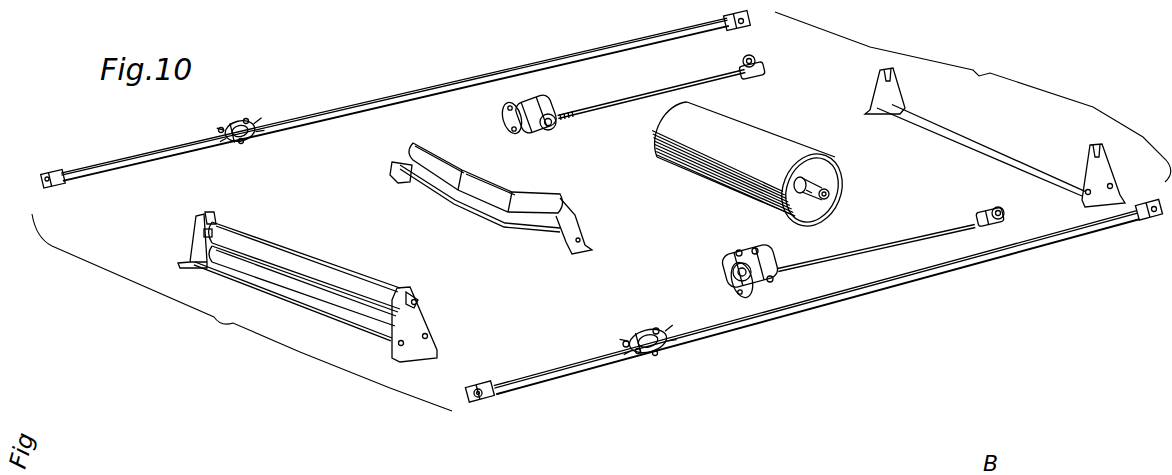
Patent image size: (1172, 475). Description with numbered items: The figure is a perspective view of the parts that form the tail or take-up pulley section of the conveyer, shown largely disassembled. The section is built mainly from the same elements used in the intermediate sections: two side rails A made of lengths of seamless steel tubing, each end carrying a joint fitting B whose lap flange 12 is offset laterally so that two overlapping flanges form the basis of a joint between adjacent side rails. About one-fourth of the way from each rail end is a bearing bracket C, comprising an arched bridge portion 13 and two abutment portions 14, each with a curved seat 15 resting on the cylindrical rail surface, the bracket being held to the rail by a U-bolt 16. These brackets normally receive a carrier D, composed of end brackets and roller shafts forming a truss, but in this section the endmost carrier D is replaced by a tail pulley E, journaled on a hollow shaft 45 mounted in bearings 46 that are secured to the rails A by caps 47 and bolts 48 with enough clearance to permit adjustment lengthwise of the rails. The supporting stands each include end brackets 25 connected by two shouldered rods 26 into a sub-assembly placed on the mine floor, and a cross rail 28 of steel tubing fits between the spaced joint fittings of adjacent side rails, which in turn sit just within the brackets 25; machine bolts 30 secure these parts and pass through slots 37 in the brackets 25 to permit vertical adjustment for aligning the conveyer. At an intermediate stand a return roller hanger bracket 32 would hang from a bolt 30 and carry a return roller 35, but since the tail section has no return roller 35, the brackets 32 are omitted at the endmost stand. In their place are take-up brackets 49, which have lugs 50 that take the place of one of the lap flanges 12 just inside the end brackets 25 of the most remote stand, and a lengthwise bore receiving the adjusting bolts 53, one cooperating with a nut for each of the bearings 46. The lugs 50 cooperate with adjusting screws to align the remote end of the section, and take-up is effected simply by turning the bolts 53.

The side rail A is at (373, 100).
The joint fitting B is at (57, 172).
The bearing bracket C is at (246, 122).
The carrier D is at (504, 190).
The tail pulley E is at (750, 138).
The lap flange 12 is at (56, 187).
The arched bridge portion 13 is at (239, 121).
The abutment portion 14 is at (216, 129).
The curved seat 15 is at (634, 354).
The U-bolt 16 is at (242, 144).
The end bracket 25 is at (188, 250).
The shouldered rod 26 is at (248, 285).
The cross rail 28 is at (284, 252).
The machine bolt 30 is at (420, 305).
The return roller hanger bracket 32 is at (203, 236).
The return roller 35 is at (292, 274).
The slot 37 is at (215, 216).
The hollow shaft 45 is at (822, 188).
The bearing 46 is at (540, 130).
The cap 47 is at (506, 105).
The bolt 48 is at (778, 276).
The take-up bracket 49 is at (752, 76).
The lug 50 is at (1005, 211).
The adjusting bolt 53 is at (587, 110).